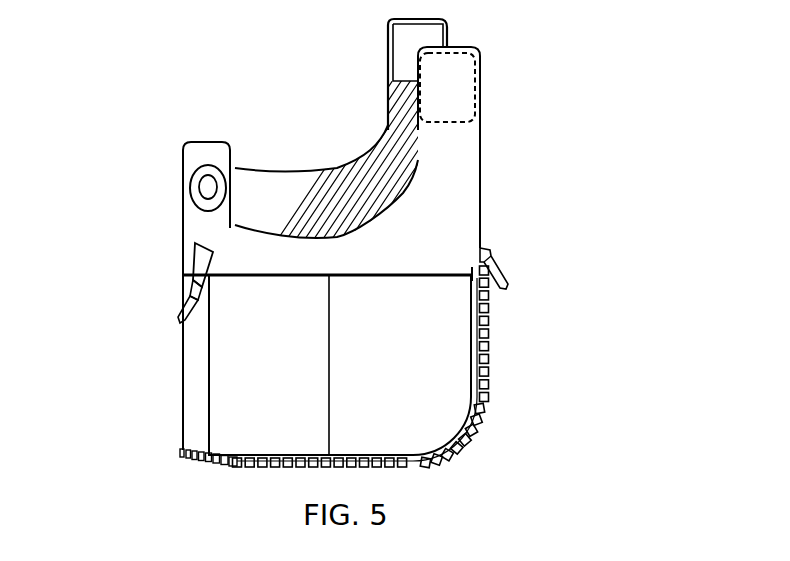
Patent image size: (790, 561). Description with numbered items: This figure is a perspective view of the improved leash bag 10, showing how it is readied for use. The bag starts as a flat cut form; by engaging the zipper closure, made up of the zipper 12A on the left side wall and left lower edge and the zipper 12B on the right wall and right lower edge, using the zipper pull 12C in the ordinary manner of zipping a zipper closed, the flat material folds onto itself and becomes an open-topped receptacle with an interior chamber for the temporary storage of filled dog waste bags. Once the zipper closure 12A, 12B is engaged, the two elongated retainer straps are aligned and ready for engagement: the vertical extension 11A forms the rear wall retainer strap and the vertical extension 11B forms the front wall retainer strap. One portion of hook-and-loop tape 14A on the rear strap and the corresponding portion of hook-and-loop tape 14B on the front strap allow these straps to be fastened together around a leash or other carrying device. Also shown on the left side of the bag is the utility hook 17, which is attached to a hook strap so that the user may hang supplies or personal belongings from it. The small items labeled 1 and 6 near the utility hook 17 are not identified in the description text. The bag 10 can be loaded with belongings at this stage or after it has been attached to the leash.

The strap 1 is at (196, 262).
The strap fastener 6 is at (137, 265).
The utility hook 17 is at (181, 318).
The bag cut form 10 is at (418, 358).
The vertical extension forming rear wall retainer strap 11A is at (388, 107).
The vertical extension forming front wall retainer strap 11B is at (475, 173).
The zipper on left side wall and left side lower edge 12A is at (180, 450).
The zipper on right wall and right lower edge 12B is at (462, 439).
The zipper pull 12C is at (493, 261).
The one portion of hook-and-loop tape 14A is at (436, 37).
The corresponding portion of hook-and-loop tape 14B is at (465, 88).